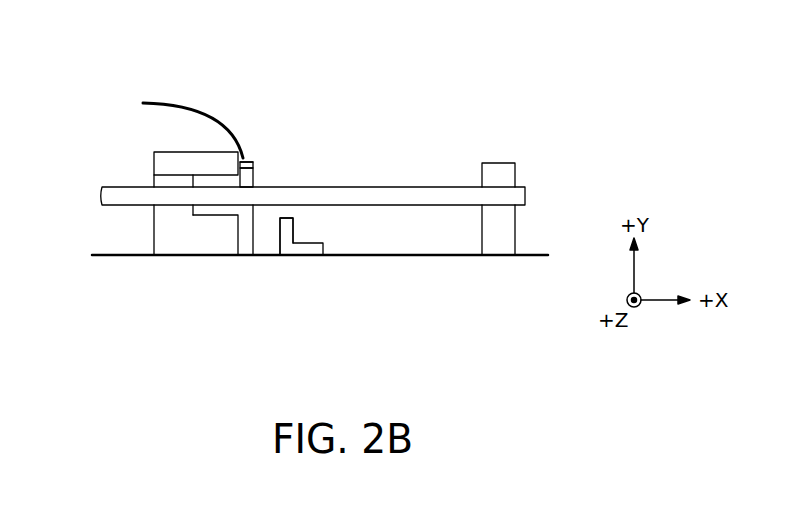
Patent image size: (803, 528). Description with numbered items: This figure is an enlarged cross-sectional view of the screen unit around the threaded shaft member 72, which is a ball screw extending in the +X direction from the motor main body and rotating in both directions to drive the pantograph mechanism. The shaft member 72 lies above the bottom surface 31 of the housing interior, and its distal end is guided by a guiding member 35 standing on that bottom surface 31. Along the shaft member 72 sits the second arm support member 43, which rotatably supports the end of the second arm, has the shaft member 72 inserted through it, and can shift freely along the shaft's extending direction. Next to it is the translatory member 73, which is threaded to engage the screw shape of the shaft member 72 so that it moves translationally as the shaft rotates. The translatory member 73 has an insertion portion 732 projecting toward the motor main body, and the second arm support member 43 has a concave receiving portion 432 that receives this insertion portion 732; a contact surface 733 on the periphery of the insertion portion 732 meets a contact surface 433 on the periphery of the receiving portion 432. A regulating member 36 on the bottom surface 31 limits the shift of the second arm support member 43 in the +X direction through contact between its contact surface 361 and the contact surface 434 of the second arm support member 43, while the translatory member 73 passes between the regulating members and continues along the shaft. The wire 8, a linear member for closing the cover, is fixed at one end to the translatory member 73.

The wire 8 is at (165, 102).
The second arm support member 43 is at (158, 151).
The insertion portion 732 is at (213, 181).
The contact surface 433 is at (243, 162).
The translatory member 73 is at (257, 166).
The contact surface 733 is at (257, 173).
The guiding member 35 is at (502, 163).
The shaft member 72 is at (122, 195).
The receiving portion 432 is at (196, 212).
The contact surface 434 is at (238, 243).
The contact surface 361 is at (280, 243).
The regulating member 36 is at (323, 250).
The bottom surface 31 is at (458, 255).